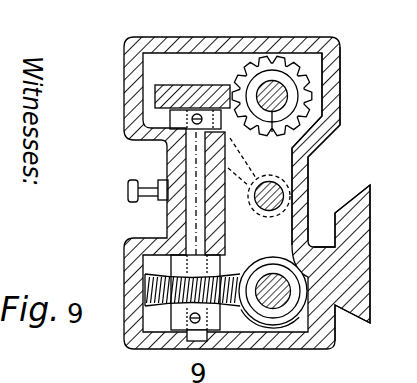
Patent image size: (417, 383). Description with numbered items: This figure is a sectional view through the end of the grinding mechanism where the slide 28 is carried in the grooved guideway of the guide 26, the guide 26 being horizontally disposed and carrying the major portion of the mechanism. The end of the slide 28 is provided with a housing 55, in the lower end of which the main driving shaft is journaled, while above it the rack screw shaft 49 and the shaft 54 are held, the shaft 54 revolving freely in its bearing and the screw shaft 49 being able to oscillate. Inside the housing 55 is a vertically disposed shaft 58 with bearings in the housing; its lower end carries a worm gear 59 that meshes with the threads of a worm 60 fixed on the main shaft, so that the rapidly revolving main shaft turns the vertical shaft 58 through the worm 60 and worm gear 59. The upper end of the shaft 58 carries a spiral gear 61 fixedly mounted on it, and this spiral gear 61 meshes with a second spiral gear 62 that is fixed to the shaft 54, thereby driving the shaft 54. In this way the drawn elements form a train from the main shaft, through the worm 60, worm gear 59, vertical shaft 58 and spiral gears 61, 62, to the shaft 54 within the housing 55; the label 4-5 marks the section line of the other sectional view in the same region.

The guide 26 is at (249, 193).
The housing 55 is at (348, 120).
The slide 28 is at (379, 236).
The spiral gear 61 is at (162, 121).
The second spiral gear 62 is at (243, 82).
The shaft 54 is at (276, 123).
The screw shaft 49 is at (268, 212).
The vertically disposed shaft 58 is at (181, 221).
The worm gear 59 is at (136, 290).
The worm 60 is at (258, 323).
The bearing cap 4-5 is at (284, 330).